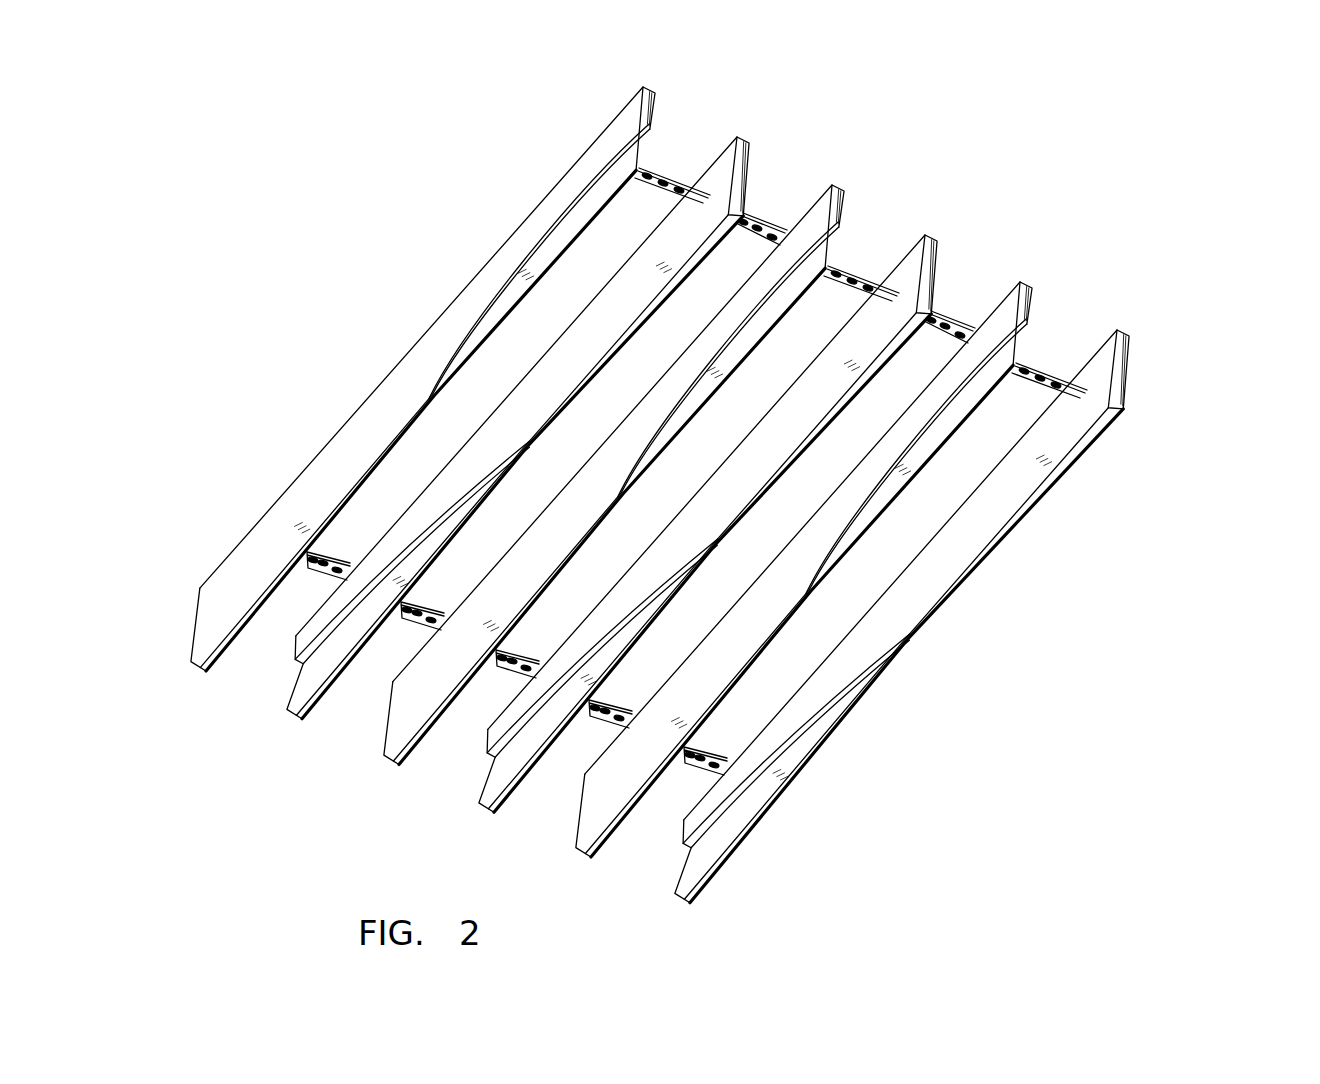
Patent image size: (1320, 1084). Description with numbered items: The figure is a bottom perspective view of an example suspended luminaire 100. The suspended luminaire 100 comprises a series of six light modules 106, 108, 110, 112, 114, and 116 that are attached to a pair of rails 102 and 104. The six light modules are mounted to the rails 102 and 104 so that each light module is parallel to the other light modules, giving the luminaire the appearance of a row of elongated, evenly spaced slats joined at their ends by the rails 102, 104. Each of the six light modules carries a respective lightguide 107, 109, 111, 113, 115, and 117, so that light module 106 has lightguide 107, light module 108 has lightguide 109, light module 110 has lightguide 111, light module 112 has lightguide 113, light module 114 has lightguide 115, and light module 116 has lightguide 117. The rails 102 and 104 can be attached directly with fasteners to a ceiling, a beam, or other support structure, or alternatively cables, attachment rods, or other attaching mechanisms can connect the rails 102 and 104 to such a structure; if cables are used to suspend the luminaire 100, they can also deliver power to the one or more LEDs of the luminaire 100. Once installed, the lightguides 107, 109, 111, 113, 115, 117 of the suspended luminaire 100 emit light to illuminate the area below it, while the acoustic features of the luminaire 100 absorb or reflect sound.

The suspended luminaire 100 is at (1104, 101).
The rail 102 is at (322, 567).
The rail 104 is at (1062, 370).
The light module 106 is at (1120, 403).
The lightguide 107 is at (808, 735).
The light module 108 is at (1027, 283).
The lightguide 109 is at (995, 355).
The light module 110 is at (934, 240).
The lightguide 111 is at (490, 773).
The light module 112 is at (841, 188).
The lightguide 113 is at (818, 252).
The light module 114 is at (752, 143).
The lightguide 115 is at (307, 685).
The light module 116 is at (656, 96).
The lightguide 117 is at (628, 162).